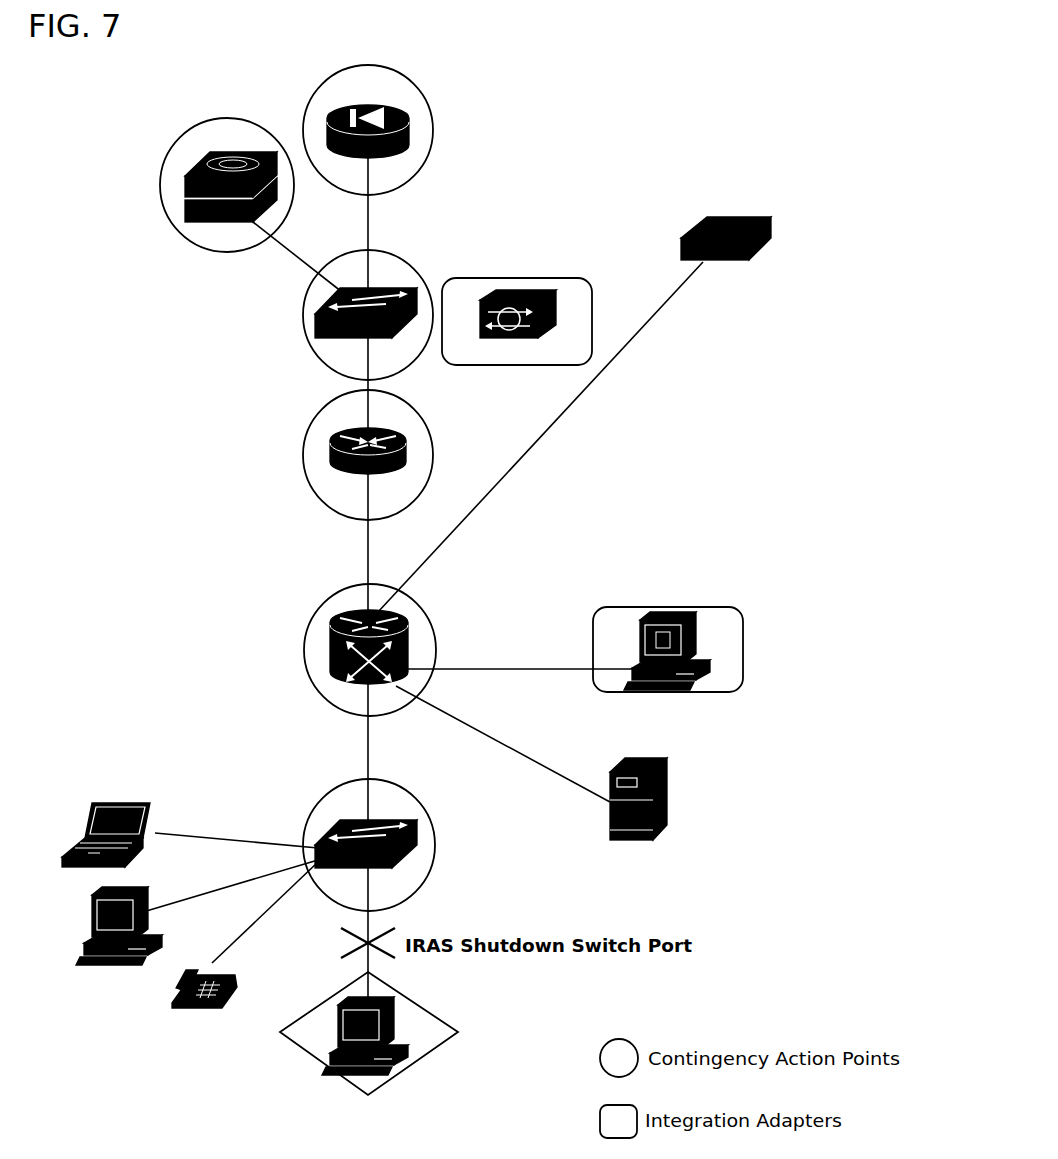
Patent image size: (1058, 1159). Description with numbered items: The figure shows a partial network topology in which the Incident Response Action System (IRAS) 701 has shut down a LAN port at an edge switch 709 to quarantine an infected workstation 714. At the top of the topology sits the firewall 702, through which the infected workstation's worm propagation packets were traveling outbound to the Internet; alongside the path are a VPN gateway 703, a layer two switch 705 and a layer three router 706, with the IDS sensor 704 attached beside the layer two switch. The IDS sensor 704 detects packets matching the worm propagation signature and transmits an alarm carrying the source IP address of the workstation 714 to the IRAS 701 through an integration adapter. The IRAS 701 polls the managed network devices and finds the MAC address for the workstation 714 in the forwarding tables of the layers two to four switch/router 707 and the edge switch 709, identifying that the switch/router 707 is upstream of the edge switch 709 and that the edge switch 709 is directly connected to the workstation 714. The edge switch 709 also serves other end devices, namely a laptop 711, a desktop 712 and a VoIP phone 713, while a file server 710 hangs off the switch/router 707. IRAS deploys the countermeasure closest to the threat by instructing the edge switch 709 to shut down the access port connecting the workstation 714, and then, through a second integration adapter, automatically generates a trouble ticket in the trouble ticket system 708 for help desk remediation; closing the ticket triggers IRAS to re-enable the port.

The IRAS 701 is at (725, 262).
The firewall 702 is at (336, 76).
The VPN Gateway 703 is at (208, 123).
The IDS sensor 704 is at (541, 278).
The Layer 2 Switch 705 is at (326, 361).
The Layer 3 Router 706 is at (316, 494).
The switch 707 is at (428, 618).
The Trouble Ticket System 708 is at (648, 607).
The edge switch 709 is at (416, 800).
The File Server 710 is at (668, 775).
The Laptop 711 is at (130, 803).
The Desktop 712 is at (78, 938).
The VoIP Phone 713 is at (237, 968).
The infected workstation 714 is at (458, 1031).